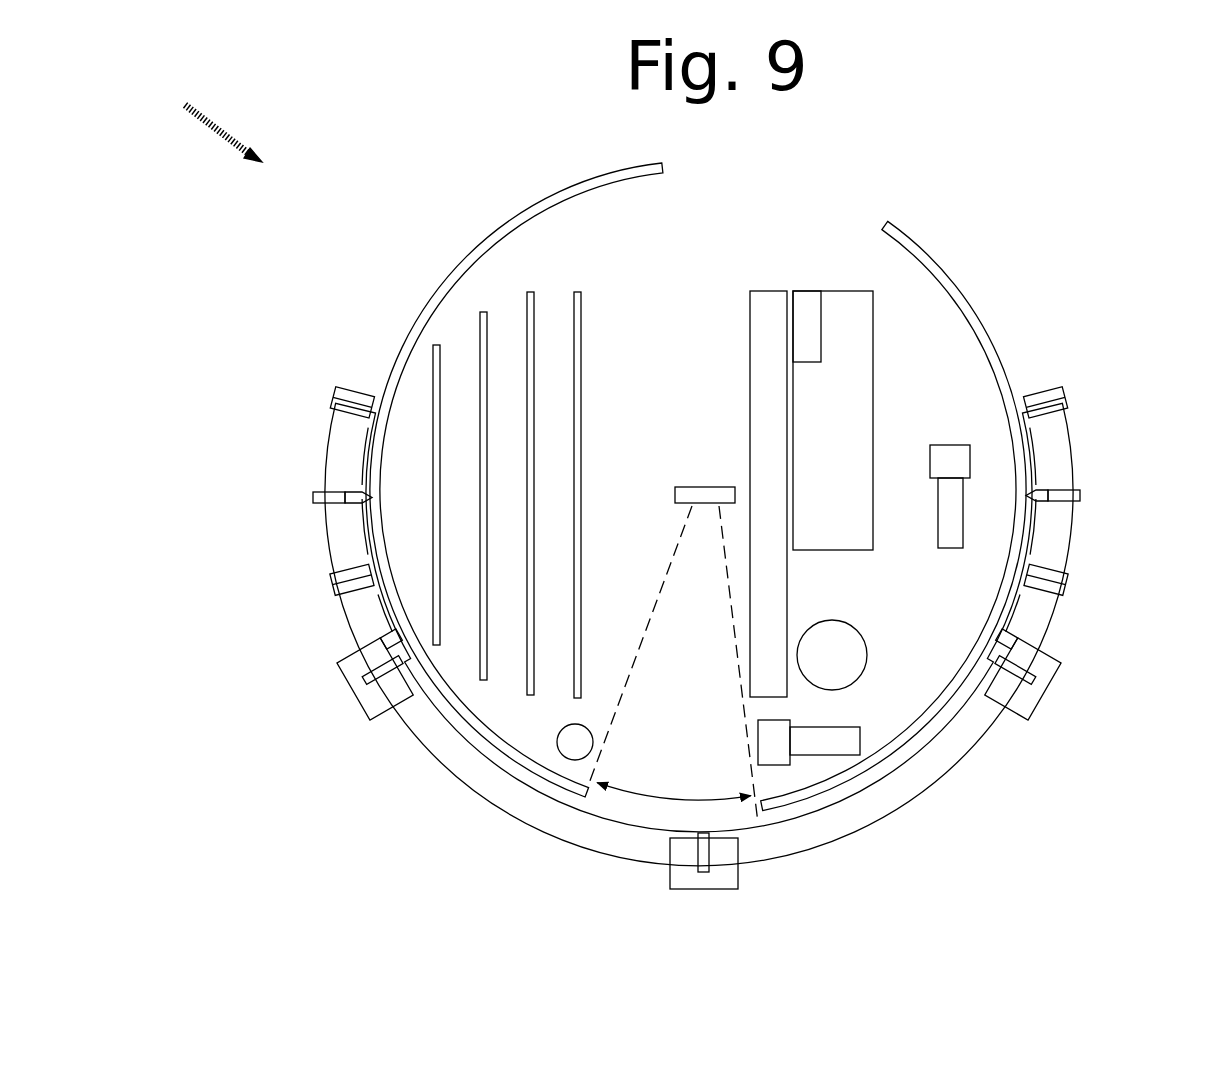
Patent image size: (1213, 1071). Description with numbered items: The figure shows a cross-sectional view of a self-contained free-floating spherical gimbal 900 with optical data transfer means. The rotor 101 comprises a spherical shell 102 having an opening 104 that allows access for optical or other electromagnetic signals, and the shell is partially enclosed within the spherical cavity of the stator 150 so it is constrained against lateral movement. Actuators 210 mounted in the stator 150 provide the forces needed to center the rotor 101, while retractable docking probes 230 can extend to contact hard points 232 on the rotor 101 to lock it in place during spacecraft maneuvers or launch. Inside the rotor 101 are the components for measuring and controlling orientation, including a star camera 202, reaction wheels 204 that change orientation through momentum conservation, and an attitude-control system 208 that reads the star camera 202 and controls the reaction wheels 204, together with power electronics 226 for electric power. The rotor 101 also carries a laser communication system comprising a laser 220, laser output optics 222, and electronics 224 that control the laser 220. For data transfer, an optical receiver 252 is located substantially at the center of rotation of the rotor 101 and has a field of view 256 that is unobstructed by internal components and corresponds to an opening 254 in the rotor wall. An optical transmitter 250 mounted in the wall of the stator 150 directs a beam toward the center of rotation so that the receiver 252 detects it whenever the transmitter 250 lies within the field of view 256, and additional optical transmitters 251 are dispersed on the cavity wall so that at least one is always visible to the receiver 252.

The system 900 is at (197, 115).
The rotor 101 is at (388, 367).
The spherical shell 102 is at (646, 487).
The opening 104 is at (822, 409).
The stator 150 is at (945, 748).
The star camera 202 is at (878, 353).
The reaction wheels 204 is at (965, 437).
The attitude-control system 208 is at (437, 343).
The actuators 210 is at (328, 398).
The laser 220 is at (768, 375).
The laser output optics 222 is at (808, 310).
The electronics 224 is at (537, 282).
The power electronics 226 is at (589, 288).
The retractable docking probes 230 is at (732, 515).
The hard points 232 is at (366, 492).
The optical transmitter 250 is at (714, 862).
The additional optical transmitters 251 is at (388, 690).
The optical receiver 252 is at (722, 508).
The opening 254 is at (757, 822).
The field of view 256 is at (643, 803).